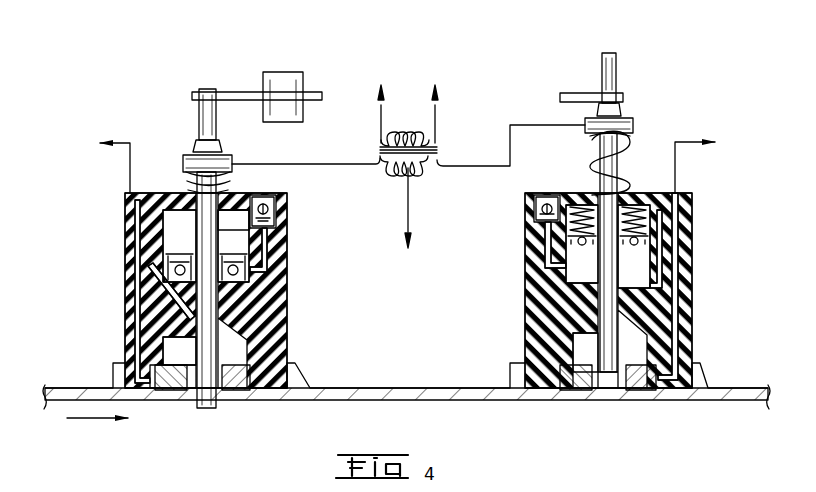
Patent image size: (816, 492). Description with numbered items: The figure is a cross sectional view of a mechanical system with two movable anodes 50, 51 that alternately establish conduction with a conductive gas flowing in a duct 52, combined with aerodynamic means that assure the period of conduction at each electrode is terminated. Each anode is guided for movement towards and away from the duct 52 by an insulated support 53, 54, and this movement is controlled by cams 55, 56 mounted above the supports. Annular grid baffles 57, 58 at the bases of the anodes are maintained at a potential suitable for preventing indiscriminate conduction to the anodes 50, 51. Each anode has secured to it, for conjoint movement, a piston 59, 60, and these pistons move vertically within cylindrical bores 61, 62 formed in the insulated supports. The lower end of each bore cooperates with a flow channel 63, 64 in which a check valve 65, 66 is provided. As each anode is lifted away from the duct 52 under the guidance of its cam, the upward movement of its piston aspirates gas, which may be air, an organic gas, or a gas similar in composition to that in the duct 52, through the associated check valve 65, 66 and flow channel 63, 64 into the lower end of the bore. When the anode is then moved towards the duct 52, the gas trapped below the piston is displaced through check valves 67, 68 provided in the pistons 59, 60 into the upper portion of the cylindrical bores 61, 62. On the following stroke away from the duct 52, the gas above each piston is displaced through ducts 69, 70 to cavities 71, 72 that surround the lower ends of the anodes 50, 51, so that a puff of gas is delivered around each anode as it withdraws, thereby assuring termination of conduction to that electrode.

The movable anode 50 is at (207, 402).
The movable anode 51 is at (607, 374).
The duct 52 is at (374, 388).
The insulated support 53 is at (283, 324).
The insulated support 54 is at (692, 326).
The cam 55 is at (216, 116).
The cam 56 is at (616, 62).
The annular grid baffle 57 is at (170, 392).
The annular grid baffle 58 is at (567, 392).
The piston 59 is at (233, 264).
The piston 60 is at (634, 246).
The cylindrical bore 61 is at (251, 216).
The cylindrical bore 62 is at (656, 277).
The flow channel 63 is at (282, 243).
The flow channel 64 is at (545, 247).
The check valve 65 is at (262, 199).
The check valve 66 is at (546, 198).
The check valve 67 is at (181, 264).
The check valve 68 is at (592, 199).
The duct 69 is at (183, 306).
The duct 70 is at (672, 220).
The cavity 71 is at (165, 352).
The cavity 72 is at (572, 339).